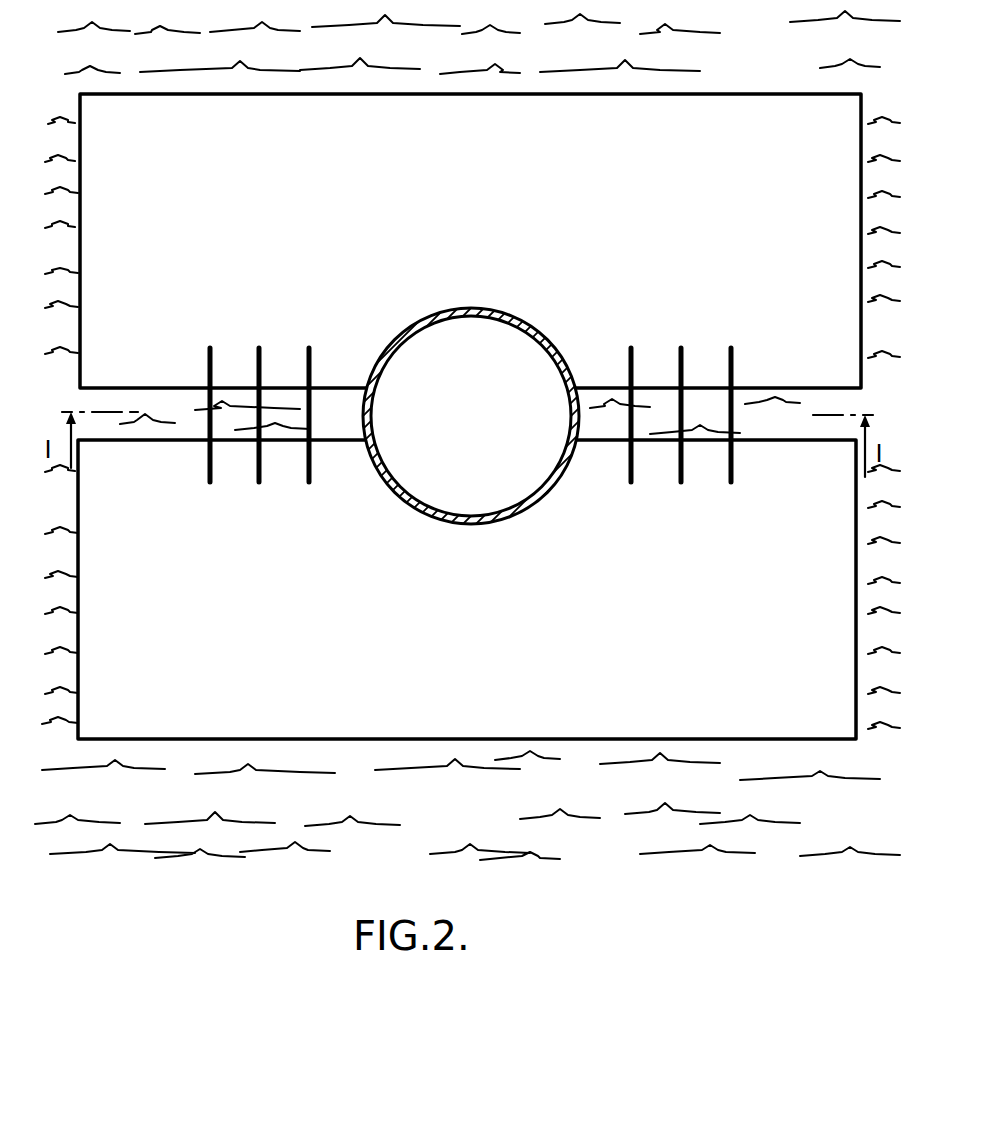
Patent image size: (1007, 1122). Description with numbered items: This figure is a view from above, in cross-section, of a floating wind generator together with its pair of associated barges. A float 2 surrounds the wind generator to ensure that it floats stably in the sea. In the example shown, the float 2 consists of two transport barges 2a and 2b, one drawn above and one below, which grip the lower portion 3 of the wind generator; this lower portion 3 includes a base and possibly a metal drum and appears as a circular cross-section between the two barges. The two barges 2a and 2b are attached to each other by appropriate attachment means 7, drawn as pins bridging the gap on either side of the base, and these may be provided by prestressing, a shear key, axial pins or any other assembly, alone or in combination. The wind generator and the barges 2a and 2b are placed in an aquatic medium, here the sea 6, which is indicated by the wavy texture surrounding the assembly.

The float 2 is at (469, 434).
The transport barge 2a is at (713, 703).
The transport barge 2b is at (746, 125).
The lower portion 3 is at (500, 316).
The sea 6 is at (451, 840).
The attachment means 7 is at (309, 350).